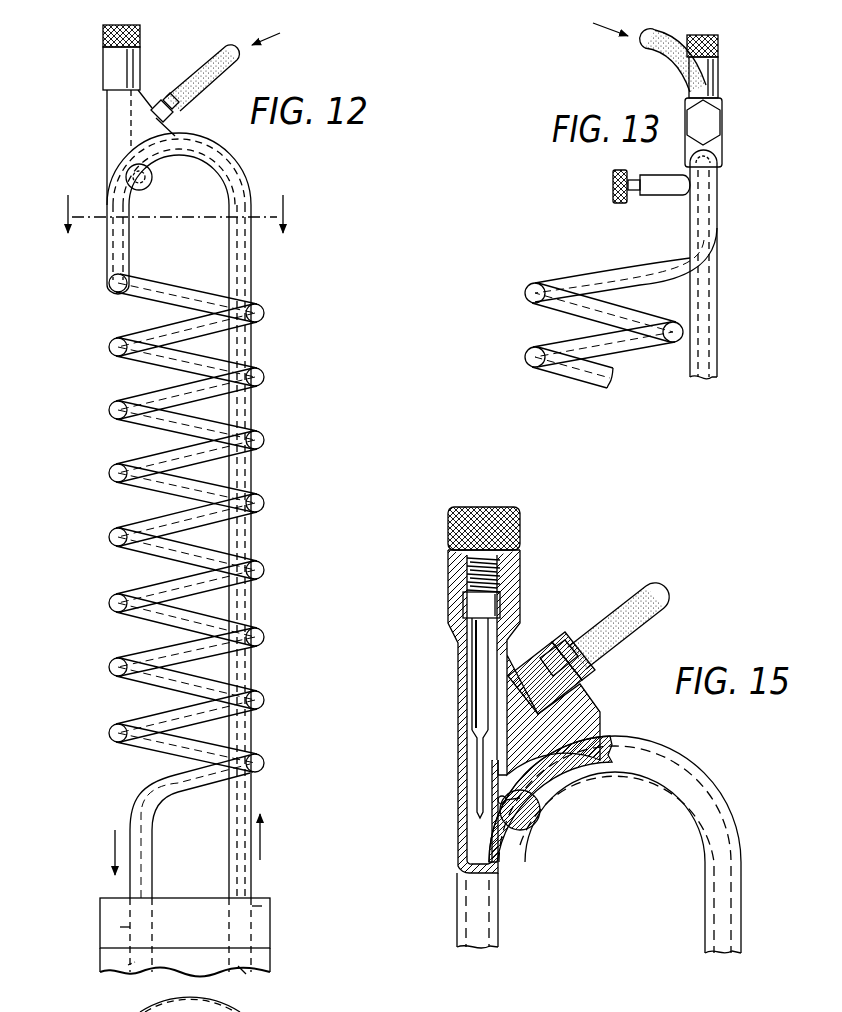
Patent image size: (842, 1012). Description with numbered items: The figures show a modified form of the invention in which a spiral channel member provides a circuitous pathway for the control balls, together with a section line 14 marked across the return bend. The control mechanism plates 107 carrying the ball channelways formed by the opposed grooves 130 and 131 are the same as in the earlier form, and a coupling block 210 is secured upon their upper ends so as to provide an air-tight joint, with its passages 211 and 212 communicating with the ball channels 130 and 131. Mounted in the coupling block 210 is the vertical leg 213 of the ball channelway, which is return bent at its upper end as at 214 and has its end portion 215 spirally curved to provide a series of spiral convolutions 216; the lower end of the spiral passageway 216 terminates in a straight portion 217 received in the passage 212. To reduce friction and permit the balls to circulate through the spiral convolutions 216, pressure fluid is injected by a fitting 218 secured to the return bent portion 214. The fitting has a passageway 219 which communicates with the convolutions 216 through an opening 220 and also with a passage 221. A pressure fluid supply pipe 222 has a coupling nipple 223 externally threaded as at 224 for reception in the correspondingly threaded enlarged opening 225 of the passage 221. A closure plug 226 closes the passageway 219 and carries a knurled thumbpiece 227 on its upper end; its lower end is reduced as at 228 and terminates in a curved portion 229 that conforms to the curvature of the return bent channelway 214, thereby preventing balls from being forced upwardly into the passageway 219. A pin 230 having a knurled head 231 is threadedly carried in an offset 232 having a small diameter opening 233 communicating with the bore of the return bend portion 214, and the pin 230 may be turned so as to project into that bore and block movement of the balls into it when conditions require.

In FIG. 12, the section line 14- 14 is at (176, 214).
In FIG. 12, the control mechanism plate 107 is at (110, 965).
In FIG. 12, the groove 130 is at (240, 968).
In FIG. 12, the groove 131 is at (105, 980).
In FIG. 12, the coupling block 210 is at (260, 935).
In FIG. 12, the passage 211 is at (268, 906).
In FIG. 12, the passage 212 is at (120, 927).
In FIG. 12, the vertical leg 213 is at (240, 536).
In FIG. 13, the vertical leg 213 is at (705, 337).
In FIG. 12, the return bent portion 214 is at (195, 149).
In FIG. 13, the return bent portion 214 is at (700, 160).
In FIG. 15, the return bent portion 214 is at (692, 795).
In FIG. 12, the end portion 215 is at (115, 262).
In FIG. 15, the end portion 215 is at (485, 905).
In FIG. 12, the spiral convolutions 216 is at (118, 535).
In FIG. 13, the spiral convolutions 216 is at (540, 358).
In FIG. 12, the straight portion 217 is at (140, 880).
In FIG. 12, the fitting 218 is at (122, 131).
In FIG. 13, the fitting 218 is at (715, 142).
In FIG. 15, the passageway 219 is at (478, 673).
In FIG. 15, the opening 220 is at (480, 855).
In FIG. 15, the passage 221 is at (507, 727).
In FIG. 12, the pressure fluid supply pipe 222 is at (212, 60).
In FIG. 13, the pressure fluid supply pipe 222 is at (662, 55).
In FIG. 15, the pressure fluid supply pipe 222 is at (618, 626).
In FIG. 15, the coupling nipple 223 is at (548, 683).
In FIG. 15, the external threads 224 is at (567, 698).
In FIG. 15, the threaded enlarged opening 225 is at (515, 697).
In FIG. 15, the closure plug 226 is at (480, 610).
In FIG. 12, the knurled thumbpiece 227 is at (103, 38).
In FIG. 13, the knurled thumbpiece 227 is at (722, 48).
In FIG. 15, the knurled thumbpiece 227 is at (480, 507).
In FIG. 15, the reduced lower end 228 is at (477, 715).
In FIG. 15, the curved portion 229 is at (500, 818).
In FIG. 13, the pin 230 is at (635, 190).
In FIG. 15, the pin 230 is at (505, 800).
In FIG. 12, the knurled head 231 is at (146, 182).
In FIG. 13, the knurled head 231 is at (612, 173).
In FIG. 13, the offset 232 is at (668, 190).
In FIG. 15, the small diameter opening 233 is at (528, 778).